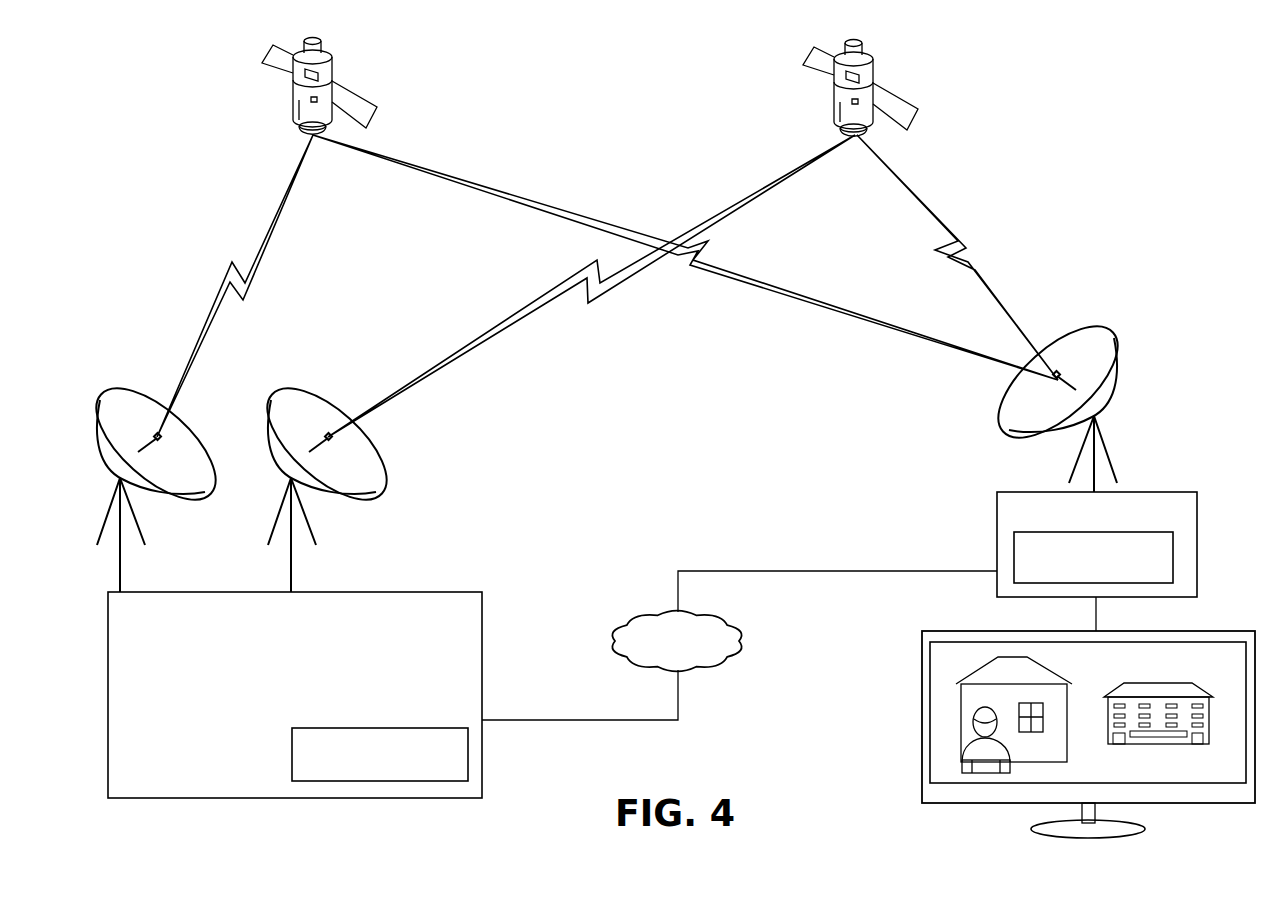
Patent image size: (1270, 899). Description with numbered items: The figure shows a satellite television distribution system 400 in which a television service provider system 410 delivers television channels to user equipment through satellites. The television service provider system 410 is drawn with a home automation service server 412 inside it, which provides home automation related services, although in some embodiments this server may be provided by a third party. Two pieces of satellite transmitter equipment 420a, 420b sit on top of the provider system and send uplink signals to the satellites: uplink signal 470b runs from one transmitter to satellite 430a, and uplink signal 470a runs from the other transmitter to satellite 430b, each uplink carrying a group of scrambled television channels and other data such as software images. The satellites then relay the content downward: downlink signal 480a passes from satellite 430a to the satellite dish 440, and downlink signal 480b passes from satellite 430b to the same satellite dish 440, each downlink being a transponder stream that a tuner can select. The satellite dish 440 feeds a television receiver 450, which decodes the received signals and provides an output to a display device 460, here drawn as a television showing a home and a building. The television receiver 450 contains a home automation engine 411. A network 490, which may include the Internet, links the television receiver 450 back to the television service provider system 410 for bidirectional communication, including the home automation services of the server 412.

The satellite television distribution system 400 is at (172, 112).
The television service provider system 410 is at (473, 592).
The home automation engine 411 is at (1093, 557).
The home automation service server 412 is at (380, 754).
The satellite transmitter equipment 420a is at (114, 392).
The satellite transmitter equipment 420b is at (286, 392).
The satellite 430a is at (374, 100).
The satellite 430b is at (914, 100).
The satellite dish 440 is at (1098, 328).
The television receiver 450 is at (1157, 492).
The display device 460 is at (1222, 631).
The uplink signal 470a is at (734, 207).
The uplink signal 470b is at (272, 224).
The downlink signal 480a is at (480, 172).
The downlink signal 480b is at (941, 212).
The network 490 is at (616, 626).